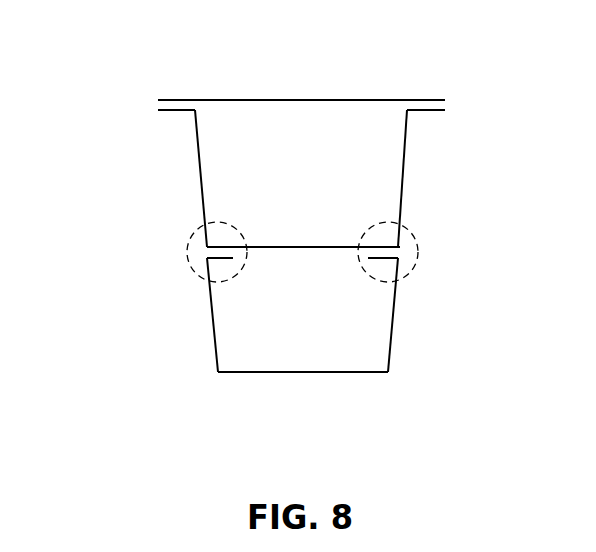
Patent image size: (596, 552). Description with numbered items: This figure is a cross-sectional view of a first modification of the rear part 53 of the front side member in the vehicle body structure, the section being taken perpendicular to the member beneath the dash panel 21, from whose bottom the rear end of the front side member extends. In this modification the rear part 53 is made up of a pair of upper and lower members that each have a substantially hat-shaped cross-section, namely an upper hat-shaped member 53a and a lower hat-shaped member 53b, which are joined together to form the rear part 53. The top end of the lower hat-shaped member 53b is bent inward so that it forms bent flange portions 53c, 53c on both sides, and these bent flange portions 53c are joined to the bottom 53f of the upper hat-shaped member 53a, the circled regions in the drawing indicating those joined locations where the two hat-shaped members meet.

The dash panel 21 is at (301, 61).
The rear part 53 is at (289, 287).
The upper hat-shaped member 53a is at (200, 178).
The lower hat-shaped member 53b is at (302, 361).
The bent flange portions 53c is at (301, 288).
The bottom of the upper hat-shaped member 53f is at (303, 286).